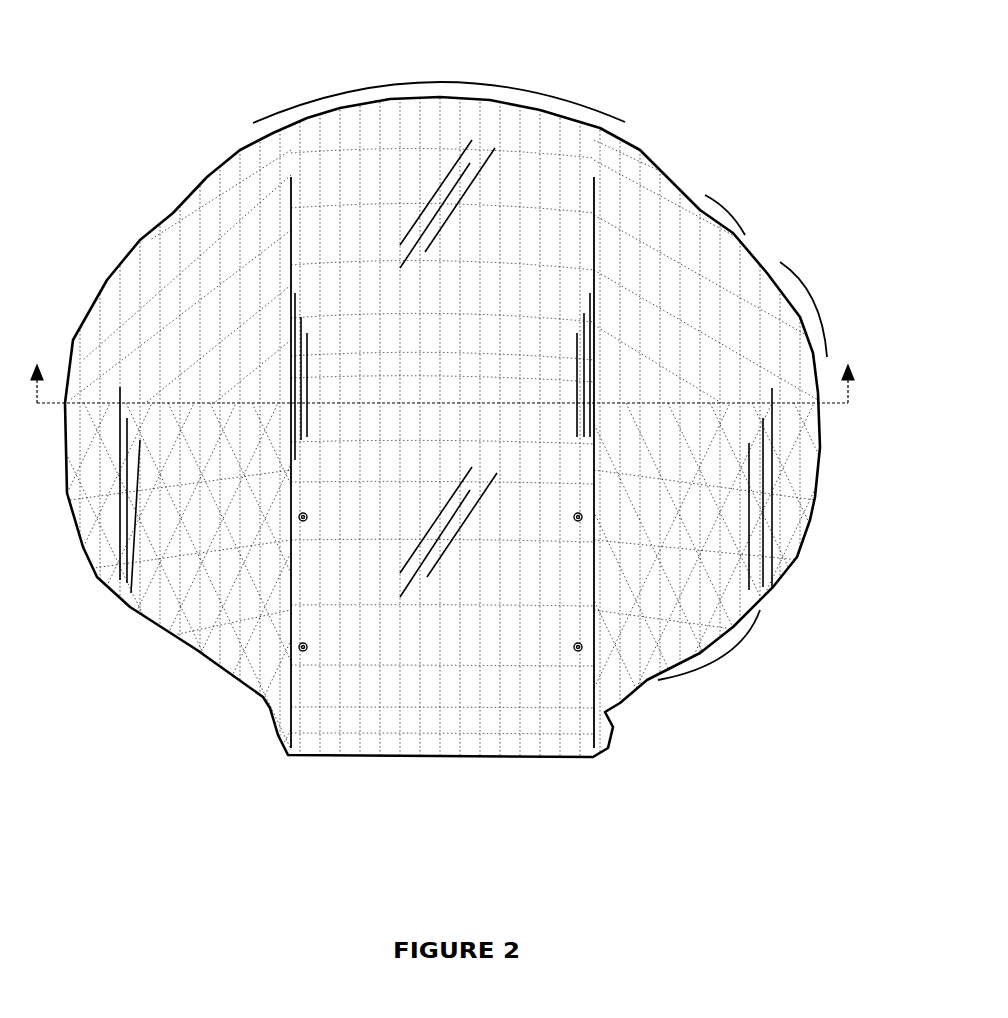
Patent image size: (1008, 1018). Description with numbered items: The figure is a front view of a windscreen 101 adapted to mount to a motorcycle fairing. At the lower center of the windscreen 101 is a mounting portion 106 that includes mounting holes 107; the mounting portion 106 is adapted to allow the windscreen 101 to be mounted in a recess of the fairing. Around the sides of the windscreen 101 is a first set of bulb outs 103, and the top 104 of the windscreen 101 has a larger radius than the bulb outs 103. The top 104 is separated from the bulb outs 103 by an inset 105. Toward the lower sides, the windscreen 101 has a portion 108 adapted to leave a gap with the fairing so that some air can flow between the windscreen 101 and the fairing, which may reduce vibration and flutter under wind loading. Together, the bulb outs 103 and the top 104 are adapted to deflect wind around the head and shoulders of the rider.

The windscreen 101 is at (812, 513).
The bulb outs 103 is at (812, 295).
The top 104 is at (447, 80).
The inset 105 is at (722, 213).
The mounting portion 106 is at (455, 598).
The mounting holes 107 is at (307, 652).
The portion 108 is at (723, 657).